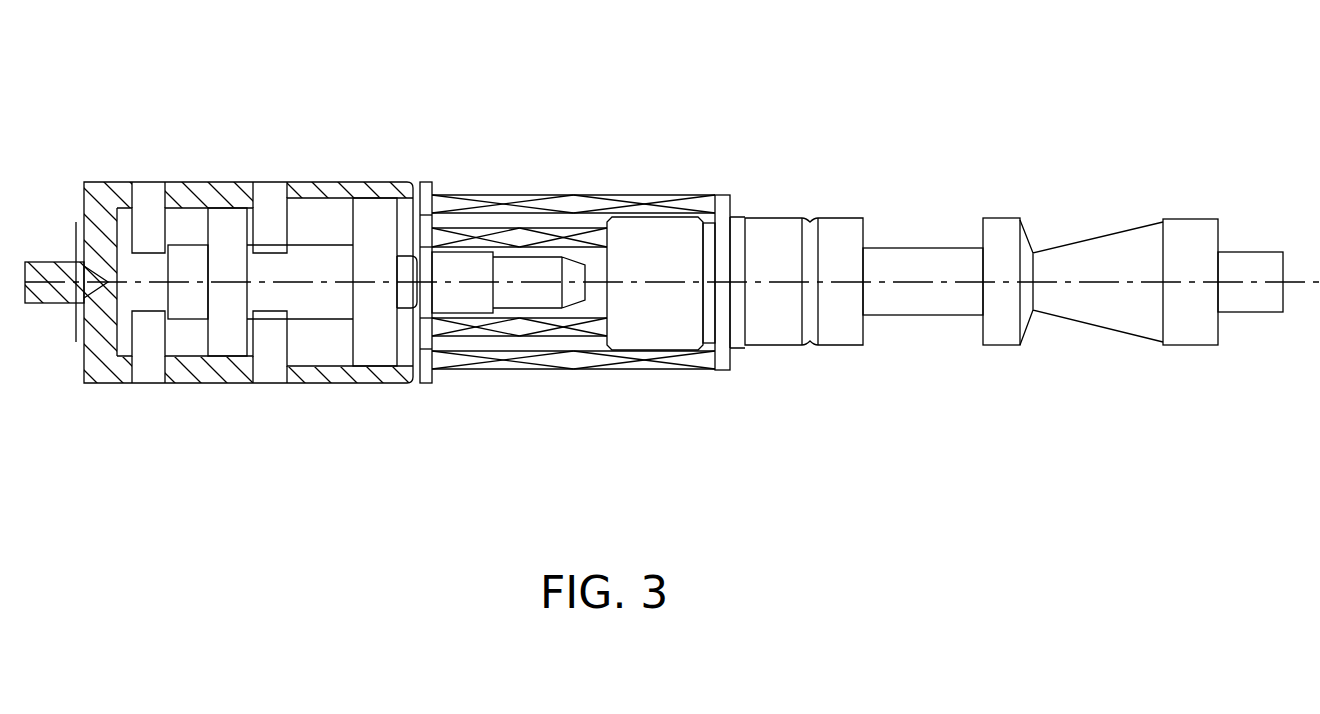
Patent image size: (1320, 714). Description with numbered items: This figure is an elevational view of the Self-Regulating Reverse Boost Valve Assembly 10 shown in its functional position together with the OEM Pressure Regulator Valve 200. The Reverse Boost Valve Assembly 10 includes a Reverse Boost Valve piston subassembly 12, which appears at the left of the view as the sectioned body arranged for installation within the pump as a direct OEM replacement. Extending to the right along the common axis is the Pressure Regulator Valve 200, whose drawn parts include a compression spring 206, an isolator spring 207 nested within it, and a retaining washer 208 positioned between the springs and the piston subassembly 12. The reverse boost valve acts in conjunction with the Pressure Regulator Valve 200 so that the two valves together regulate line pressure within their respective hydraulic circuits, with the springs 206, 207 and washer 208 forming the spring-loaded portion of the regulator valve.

The Self-Regulating Reverse Boost Valve Assembly 10 is at (672, 240).
The Reverse Boost Valve piston subassembly 12 is at (329, 336).
The Pressure Regulator Valve 200 is at (913, 207).
The compression spring 206 is at (550, 196).
The isolator spring 207 is at (530, 337).
The retaining washer 208 is at (427, 206).